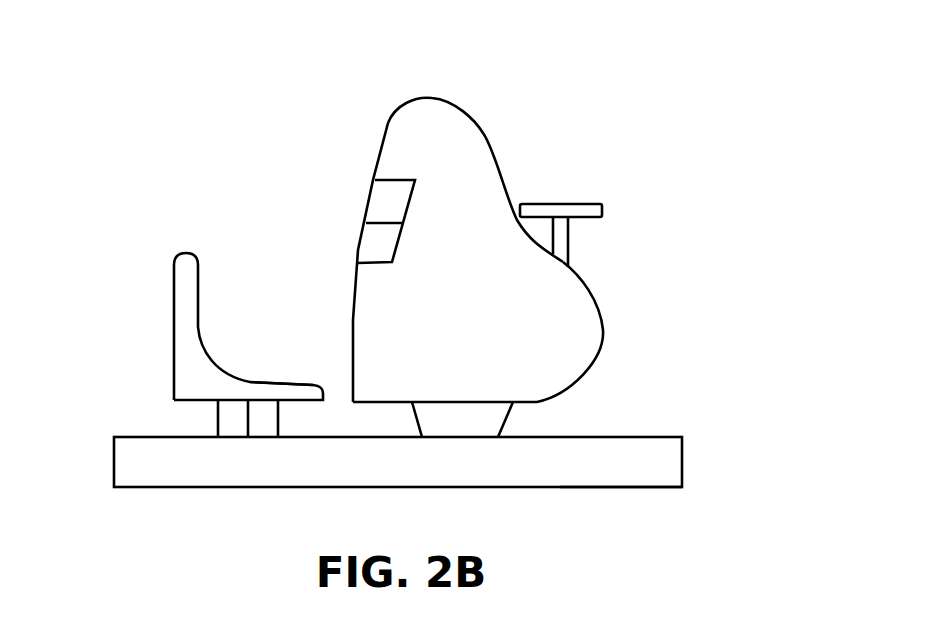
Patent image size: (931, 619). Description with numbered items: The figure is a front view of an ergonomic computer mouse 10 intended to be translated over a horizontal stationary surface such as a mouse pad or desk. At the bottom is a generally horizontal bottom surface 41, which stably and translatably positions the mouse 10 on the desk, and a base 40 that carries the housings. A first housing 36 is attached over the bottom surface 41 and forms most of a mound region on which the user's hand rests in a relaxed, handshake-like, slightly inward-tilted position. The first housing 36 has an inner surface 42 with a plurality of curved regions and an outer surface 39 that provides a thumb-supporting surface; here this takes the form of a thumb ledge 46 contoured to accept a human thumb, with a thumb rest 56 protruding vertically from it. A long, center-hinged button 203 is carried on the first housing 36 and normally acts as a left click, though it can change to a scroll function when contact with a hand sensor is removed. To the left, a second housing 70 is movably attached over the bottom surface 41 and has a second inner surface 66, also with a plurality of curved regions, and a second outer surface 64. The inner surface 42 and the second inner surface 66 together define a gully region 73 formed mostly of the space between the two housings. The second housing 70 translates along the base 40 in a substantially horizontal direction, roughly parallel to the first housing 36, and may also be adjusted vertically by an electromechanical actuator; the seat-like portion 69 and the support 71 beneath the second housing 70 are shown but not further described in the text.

The mouse 10 is at (667, 262).
The first housing 36 is at (480, 82).
The outer surface 39 is at (483, 133).
The inner surface 42 is at (378, 148).
The thumb ledge 46 is at (603, 343).
The button 203 is at (377, 203).
The thumb rest 56 is at (582, 203).
The base 40 is at (393, 480).
The horizontal bottom surface 41 is at (607, 487).
The second housing 70 is at (143, 268).
The second outer surface 64 is at (173, 327).
The second inner surface 66 is at (200, 287).
The seat bottom 69 is at (195, 373).
The gully region 73 is at (279, 353).
The seat support 71 is at (262, 400).